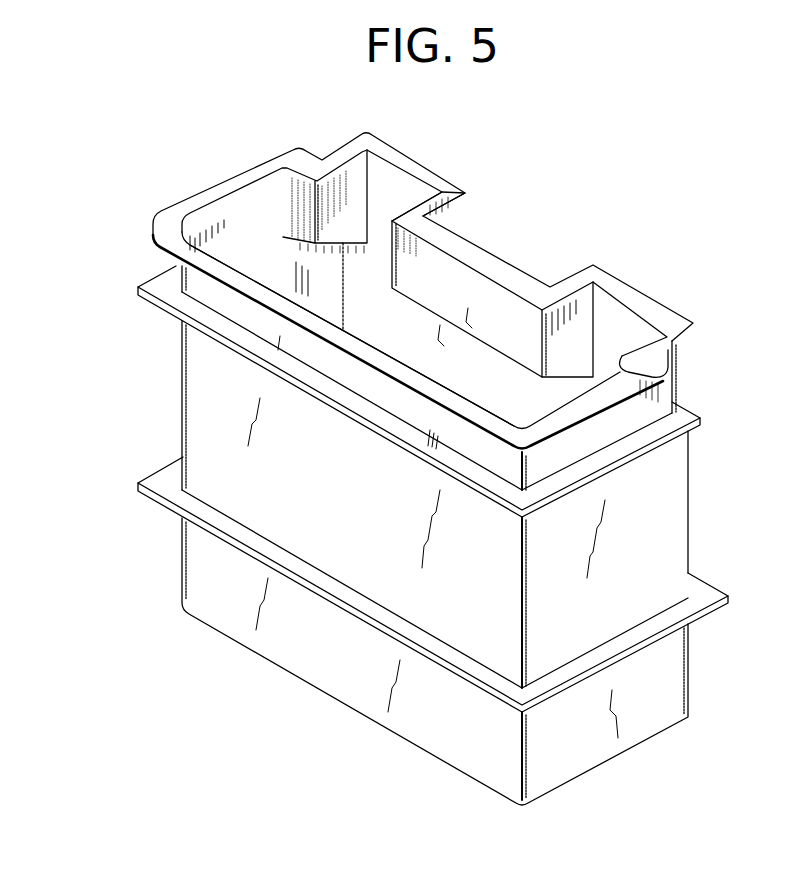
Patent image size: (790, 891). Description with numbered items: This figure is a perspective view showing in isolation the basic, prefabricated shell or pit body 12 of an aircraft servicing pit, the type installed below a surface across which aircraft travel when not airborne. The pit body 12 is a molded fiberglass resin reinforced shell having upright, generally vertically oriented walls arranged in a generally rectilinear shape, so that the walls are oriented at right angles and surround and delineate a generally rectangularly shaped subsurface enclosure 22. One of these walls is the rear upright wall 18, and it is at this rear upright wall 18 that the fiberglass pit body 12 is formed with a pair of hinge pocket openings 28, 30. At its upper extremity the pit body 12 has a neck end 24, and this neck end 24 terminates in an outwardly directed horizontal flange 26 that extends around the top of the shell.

The pit body 12 is at (167, 376).
The rear upright wall 18 is at (410, 337).
The subsurface enclosure 22 is at (470, 362).
The neck end 24 is at (202, 287).
The horizontal flange 26 is at (232, 192).
The hinge pocket opening 28 is at (398, 192).
The hinge pocket opening 30 is at (640, 322).